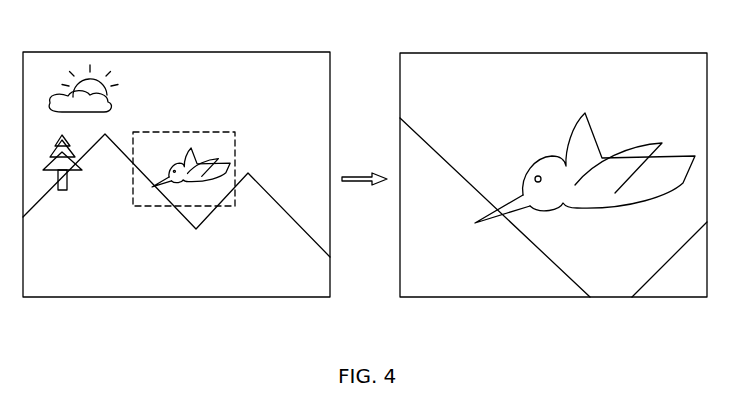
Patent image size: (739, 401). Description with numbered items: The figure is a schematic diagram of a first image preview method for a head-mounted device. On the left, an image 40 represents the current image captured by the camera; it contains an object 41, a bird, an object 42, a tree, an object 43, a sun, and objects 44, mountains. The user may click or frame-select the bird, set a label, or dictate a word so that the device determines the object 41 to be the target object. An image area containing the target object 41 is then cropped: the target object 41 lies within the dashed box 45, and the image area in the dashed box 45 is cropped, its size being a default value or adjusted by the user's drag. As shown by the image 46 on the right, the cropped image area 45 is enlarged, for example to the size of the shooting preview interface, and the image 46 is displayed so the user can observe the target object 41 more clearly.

The image 40 is at (287, 52).
The object "bird" 41 is at (218, 156).
The object "tree" 42 is at (72, 138).
The object "sun" 43 is at (120, 90).
The objects "mountains" 44 is at (273, 195).
The dashed box 45 is at (200, 132).
The image 46 is at (637, 53).